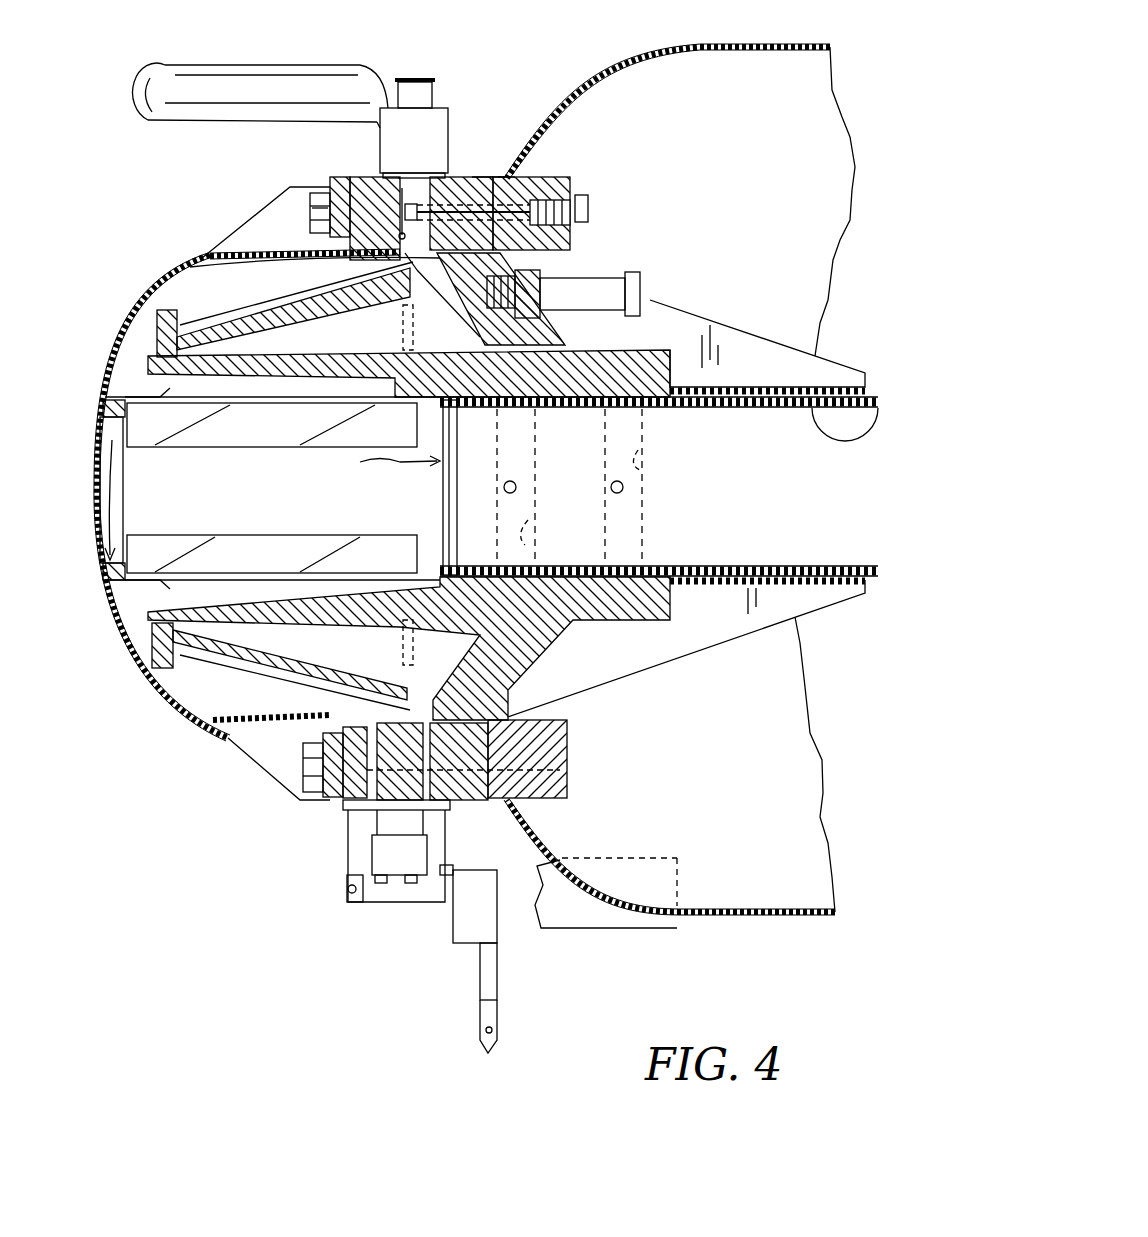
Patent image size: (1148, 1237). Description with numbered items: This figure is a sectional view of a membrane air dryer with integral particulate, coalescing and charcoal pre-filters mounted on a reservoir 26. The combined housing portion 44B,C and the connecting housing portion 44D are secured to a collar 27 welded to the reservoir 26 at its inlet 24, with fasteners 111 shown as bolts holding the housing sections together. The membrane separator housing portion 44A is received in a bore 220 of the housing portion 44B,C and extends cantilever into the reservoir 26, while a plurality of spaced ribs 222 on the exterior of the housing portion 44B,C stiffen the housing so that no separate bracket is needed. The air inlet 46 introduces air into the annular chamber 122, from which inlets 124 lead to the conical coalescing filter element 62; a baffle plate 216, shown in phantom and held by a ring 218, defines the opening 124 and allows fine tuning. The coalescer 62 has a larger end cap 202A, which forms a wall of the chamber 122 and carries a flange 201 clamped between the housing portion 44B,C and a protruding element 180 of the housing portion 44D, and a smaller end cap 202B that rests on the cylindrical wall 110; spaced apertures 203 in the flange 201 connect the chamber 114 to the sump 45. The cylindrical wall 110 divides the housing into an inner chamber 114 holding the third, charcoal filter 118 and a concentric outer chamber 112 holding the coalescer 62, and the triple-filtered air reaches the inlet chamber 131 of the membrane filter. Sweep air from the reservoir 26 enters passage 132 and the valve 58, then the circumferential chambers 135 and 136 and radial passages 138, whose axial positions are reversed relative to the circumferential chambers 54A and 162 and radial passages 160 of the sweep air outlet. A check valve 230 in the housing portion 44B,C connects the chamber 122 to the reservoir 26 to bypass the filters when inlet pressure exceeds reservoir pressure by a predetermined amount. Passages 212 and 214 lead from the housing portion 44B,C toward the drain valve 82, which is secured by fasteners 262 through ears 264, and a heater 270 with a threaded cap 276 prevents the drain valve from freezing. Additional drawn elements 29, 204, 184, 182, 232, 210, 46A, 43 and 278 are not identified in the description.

The reservoir 26 is at (766, 45).
The housing section 29 is at (605, 928).
The air inlet 46 is at (178, 88).
The valve 58 is at (440, 118).
The clamp pin 204 is at (392, 260).
The housing portion 44B,C is at (472, 175).
The passage 132 is at (505, 175).
The nut 184 is at (320, 226).
The fasteners 111 is at (312, 208).
The protrude element 180 is at (335, 178).
The clamp block 182 is at (372, 185).
The reservoir inlet 24 is at (528, 177).
The collar 27 is at (565, 185).
The end cap 202A is at (585, 236).
The housing portion 44D is at (170, 256).
The sump 45 is at (213, 246).
The threaded bore 232 is at (545, 262).
The check valve 230 is at (648, 288).
The ribs 222 is at (730, 337).
The circumferential chamber 135 is at (660, 330).
The outer chamber 112 is at (262, 343).
The annular chamber 122 is at (547, 327).
The inlets 124 is at (485, 345).
The ring 218 is at (400, 343).
The flange 201 is at (280, 292).
The spaced apertures 203 is at (330, 265).
The coalescing filter element 62 is at (152, 327).
The end cap 202B is at (165, 306).
The baffle plate 216 is at (400, 328).
The duct 210 is at (104, 420).
The inner chamber 114 is at (190, 400).
The third filter 118 is at (262, 537).
The cylindrical wall 110 is at (283, 372).
The inlet chamber 131 is at (387, 487).
The plate 46A is at (443, 475).
The tube 43 is at (443, 557).
The housing portion 44A is at (818, 507).
The bore 220 is at (860, 430).
The radial passages 160 is at (517, 485).
The radial passages 138 is at (623, 488).
The circumferential chamber 54A is at (520, 410).
The annular passage 162 is at (530, 520).
The circumferential chamber 136 is at (642, 471).
The passage 212 is at (307, 767).
The passage 214 is at (492, 743).
The drain valve 82 is at (300, 837).
The ears 264 is at (375, 855).
The fasteners 262 is at (410, 885).
The threaded cap 276 is at (347, 893).
The heater 270 is at (467, 920).
The probe tip 278 is at (497, 1027).